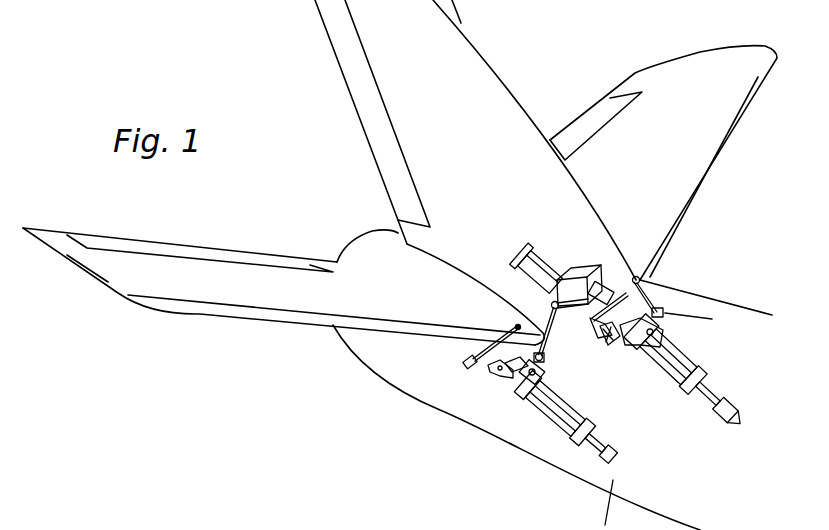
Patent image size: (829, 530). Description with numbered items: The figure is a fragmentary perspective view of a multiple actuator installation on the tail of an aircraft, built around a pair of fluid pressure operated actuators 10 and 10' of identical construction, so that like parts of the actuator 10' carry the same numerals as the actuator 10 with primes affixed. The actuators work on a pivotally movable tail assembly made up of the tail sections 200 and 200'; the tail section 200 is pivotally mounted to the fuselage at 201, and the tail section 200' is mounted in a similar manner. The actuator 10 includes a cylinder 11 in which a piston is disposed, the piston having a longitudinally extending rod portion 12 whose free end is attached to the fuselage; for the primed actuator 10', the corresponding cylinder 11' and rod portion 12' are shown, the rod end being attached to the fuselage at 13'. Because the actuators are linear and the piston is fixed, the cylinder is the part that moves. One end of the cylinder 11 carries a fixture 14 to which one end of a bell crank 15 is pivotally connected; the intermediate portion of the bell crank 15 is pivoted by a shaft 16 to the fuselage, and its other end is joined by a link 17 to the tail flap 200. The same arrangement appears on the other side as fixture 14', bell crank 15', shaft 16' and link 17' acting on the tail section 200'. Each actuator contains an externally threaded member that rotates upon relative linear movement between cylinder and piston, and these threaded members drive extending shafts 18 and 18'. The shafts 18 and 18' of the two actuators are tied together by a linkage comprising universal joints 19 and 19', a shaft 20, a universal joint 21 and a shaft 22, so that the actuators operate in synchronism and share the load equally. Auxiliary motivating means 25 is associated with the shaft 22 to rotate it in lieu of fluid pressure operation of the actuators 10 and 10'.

The tail section 200 is at (279, 294).
The pivot mounting 201 is at (461, 300).
The tail section 200' is at (663, 174).
The auxiliary motivating means 25 is at (570, 273).
The shaft 22 is at (618, 273).
The universal joint 21 is at (552, 306).
The shaft 20 is at (551, 310).
The universal joint 19 is at (559, 335).
The link 17 is at (492, 330).
The bell crank 15 is at (480, 382).
The shaft 16 is at (504, 392).
The extending shaft 18 is at (557, 378).
The fixture 14 is at (508, 390).
The actuator 10 is at (563, 431).
The cylinder 11 is at (546, 465).
The rod portion 12 is at (576, 493).
The link 17' is at (645, 295).
The bell crank 15' is at (594, 340).
The shaft 16' is at (615, 344).
The extending shaft 18' is at (665, 332).
The universal joint 19' is at (715, 281).
The actuator 10' is at (687, 375).
The fixture 14' is at (645, 372).
The cylinder 11' is at (689, 412).
The rod portion 12' is at (711, 436).
The fuselage attachment point 13' is at (751, 433).